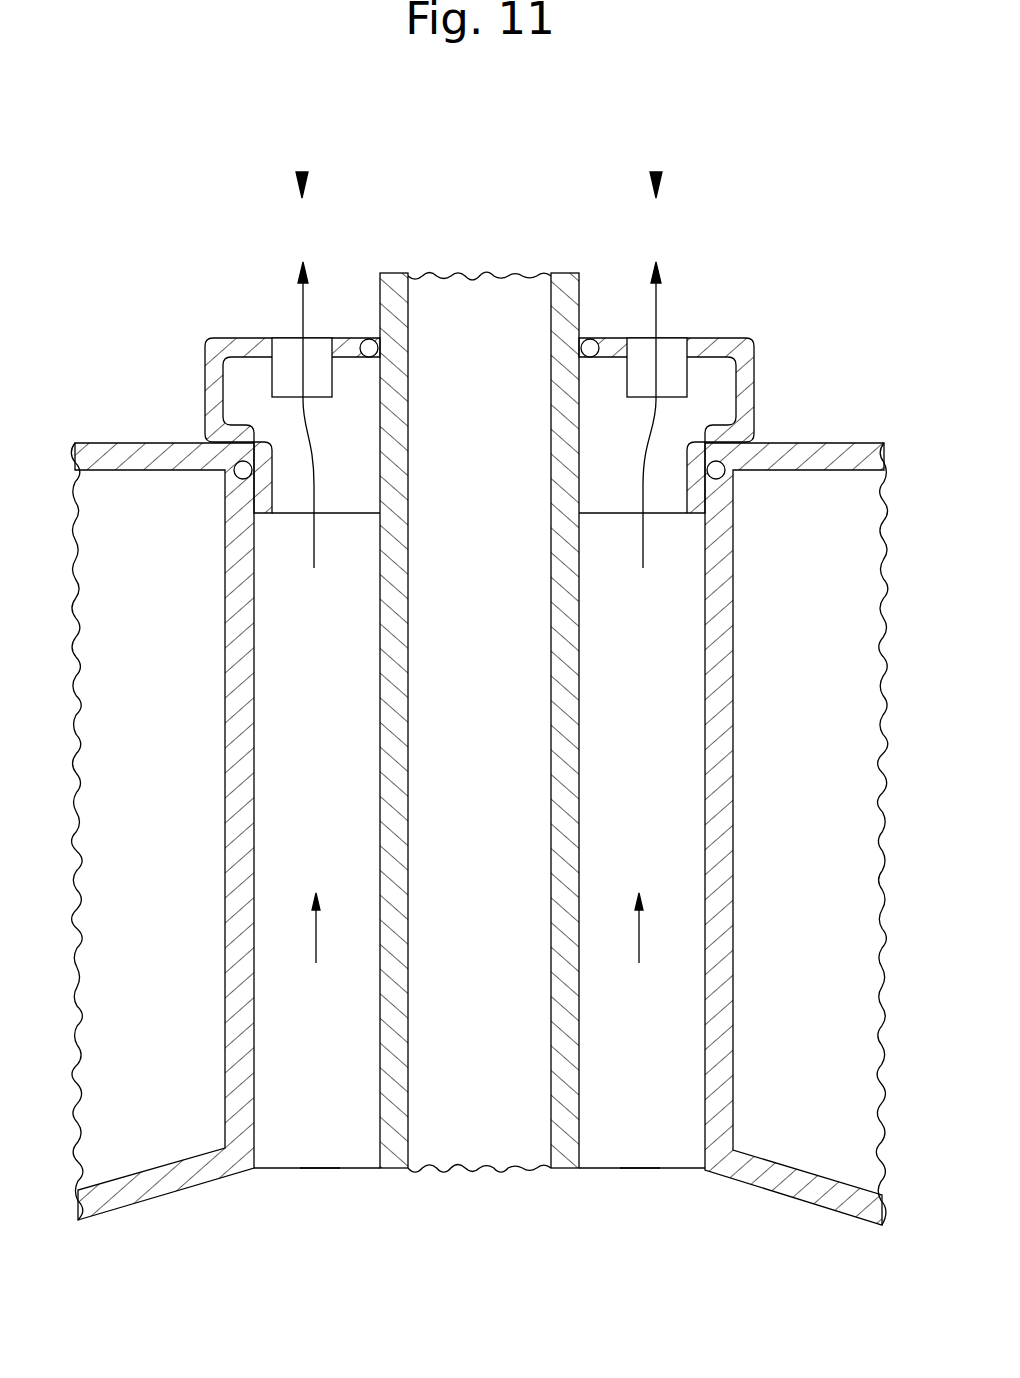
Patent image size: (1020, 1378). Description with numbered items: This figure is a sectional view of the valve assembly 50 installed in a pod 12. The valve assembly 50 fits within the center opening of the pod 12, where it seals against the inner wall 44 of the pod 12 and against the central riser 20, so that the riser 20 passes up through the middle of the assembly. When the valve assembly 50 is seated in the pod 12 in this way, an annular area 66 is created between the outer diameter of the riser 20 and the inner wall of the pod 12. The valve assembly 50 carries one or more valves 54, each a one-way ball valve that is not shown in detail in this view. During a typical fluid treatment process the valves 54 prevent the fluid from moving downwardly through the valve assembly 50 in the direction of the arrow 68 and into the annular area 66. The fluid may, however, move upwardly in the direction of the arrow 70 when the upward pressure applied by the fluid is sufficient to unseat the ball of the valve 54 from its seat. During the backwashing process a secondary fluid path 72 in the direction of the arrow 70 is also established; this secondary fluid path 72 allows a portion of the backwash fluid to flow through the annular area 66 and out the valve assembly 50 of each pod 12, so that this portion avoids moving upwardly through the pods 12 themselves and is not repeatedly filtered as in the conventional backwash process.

The pod 12 is at (135, 826).
The riser 20 is at (467, 741).
The inner wall of the pod 44 is at (302, 747).
The valve assembly 50 is at (206, 375).
The valve 54 is at (284, 352).
The annular area 66 is at (316, 1107).
The arrow 68 is at (302, 174).
The arrow 70 is at (477, 945).
The secondary fluid path 72 is at (873, 1277).